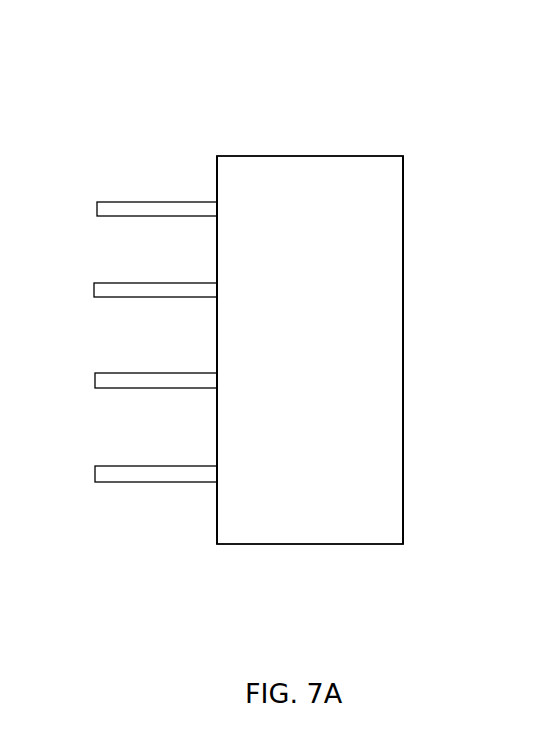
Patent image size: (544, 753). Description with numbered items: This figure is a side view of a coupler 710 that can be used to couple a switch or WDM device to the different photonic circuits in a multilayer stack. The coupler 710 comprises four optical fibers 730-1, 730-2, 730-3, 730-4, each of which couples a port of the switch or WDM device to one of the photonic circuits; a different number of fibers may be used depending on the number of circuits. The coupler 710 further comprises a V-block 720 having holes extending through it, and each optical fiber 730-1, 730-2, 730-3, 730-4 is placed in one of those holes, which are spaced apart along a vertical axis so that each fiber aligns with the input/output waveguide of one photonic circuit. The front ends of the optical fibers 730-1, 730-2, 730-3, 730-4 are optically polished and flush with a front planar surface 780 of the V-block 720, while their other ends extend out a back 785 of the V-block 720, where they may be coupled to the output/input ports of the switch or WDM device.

The coupler 710 is at (512, 87).
The V-block 720 is at (325, 156).
The optical fiber 730-1 is at (122, 202).
The optical fiber 730-2 is at (135, 283).
The optical fiber 730-3 is at (137, 373).
The optical fiber 730-4 is at (140, 466).
The front planar surface 780 is at (403, 399).
The back 785 is at (215, 515).